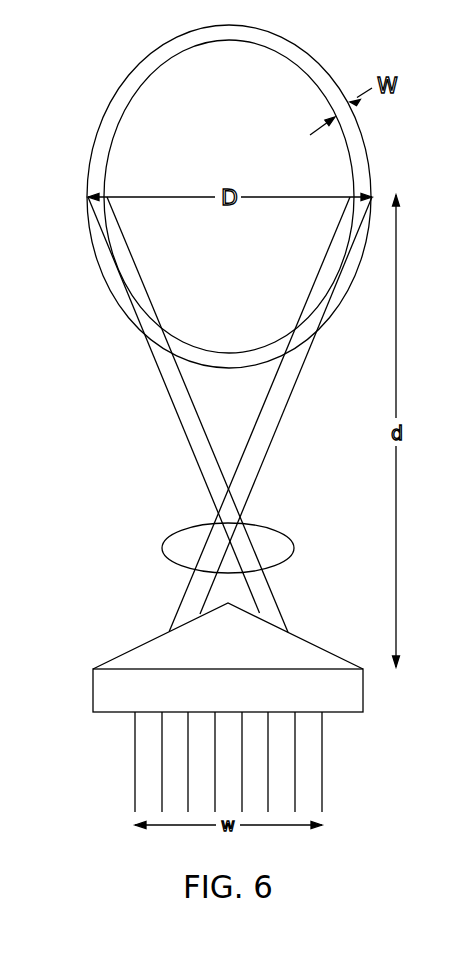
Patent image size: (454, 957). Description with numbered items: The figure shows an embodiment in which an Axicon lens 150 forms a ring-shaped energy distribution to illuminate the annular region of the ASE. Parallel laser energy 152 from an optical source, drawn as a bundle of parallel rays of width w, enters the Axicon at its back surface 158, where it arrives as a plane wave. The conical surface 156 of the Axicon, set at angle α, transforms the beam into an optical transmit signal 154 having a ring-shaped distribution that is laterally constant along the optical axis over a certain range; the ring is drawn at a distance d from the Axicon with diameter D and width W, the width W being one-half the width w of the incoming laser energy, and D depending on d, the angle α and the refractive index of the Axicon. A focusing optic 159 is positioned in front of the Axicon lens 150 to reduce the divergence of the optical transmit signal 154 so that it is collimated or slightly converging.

The Axicon lens 150 is at (323, 639).
The parallel laser energy 152 is at (323, 757).
The optical transmit signal 154 is at (122, 89).
The conical surface 156 is at (142, 645).
The back surface 158 is at (122, 713).
The focusing optic 159 is at (163, 549).